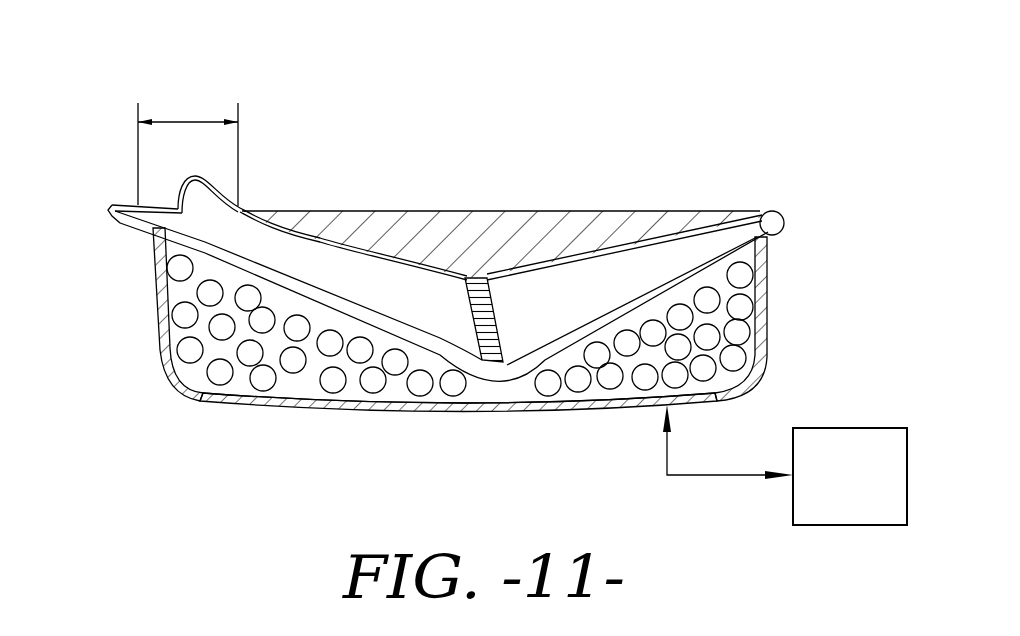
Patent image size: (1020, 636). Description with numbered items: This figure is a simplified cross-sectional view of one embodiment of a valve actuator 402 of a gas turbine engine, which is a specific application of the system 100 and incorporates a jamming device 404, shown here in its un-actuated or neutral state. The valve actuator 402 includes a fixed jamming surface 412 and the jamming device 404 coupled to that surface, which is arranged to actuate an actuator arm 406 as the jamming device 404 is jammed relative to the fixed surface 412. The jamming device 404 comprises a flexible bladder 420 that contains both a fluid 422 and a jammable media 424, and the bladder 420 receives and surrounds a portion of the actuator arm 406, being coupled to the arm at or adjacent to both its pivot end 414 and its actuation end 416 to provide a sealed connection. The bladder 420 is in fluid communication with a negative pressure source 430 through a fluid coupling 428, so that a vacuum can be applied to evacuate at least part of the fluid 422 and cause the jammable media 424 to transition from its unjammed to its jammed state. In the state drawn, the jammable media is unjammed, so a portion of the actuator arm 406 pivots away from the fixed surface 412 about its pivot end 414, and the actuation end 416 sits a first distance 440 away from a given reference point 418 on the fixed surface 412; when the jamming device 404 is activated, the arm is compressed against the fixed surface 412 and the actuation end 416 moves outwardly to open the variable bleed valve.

The system 100 is at (469, 267).
The valve actuator 402 is at (661, 175).
The jamming device 404 is at (186, 401).
The actuator arm 406 is at (318, 287).
The fixed jamming surface 412 is at (510, 232).
The pivot end 414 is at (775, 223).
The actuation end 416 is at (134, 220).
The reference point 418 is at (240, 204).
The flexible bladder 420 is at (243, 408).
The fluid 422 is at (491, 398).
The jammable media 424 is at (372, 393).
The fluid coupling 428 is at (695, 477).
The negative pressure source 430 is at (877, 490).
The first distance 440 is at (193, 118).